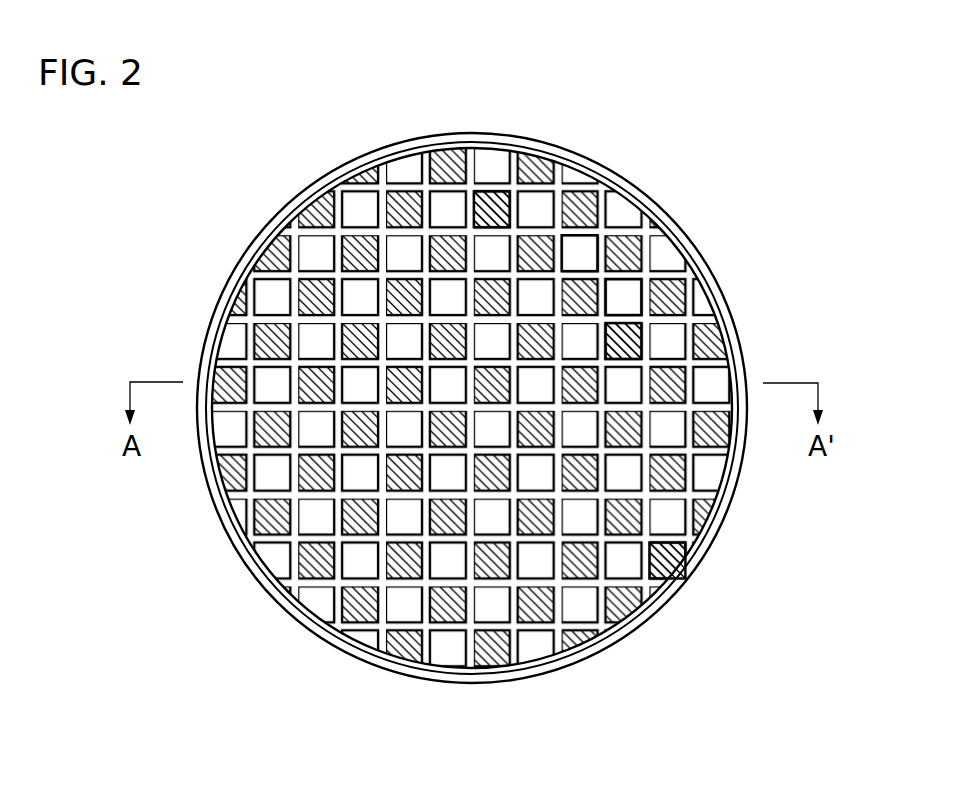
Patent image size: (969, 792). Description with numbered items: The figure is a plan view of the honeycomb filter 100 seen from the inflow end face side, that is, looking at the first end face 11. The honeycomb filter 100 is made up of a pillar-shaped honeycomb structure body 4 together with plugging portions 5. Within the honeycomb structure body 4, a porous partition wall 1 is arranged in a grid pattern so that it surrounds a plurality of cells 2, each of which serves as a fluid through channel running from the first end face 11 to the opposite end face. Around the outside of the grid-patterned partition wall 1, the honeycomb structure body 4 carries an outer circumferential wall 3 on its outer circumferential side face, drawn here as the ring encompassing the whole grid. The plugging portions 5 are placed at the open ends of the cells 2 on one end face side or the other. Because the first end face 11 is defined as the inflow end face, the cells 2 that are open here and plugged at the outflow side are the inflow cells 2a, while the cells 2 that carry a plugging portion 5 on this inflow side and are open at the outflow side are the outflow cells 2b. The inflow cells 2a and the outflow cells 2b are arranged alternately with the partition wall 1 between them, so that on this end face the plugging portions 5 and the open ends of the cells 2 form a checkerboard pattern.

The honeycomb filter 100 is at (812, 104).
The first end face 11 is at (277, 190).
The partition wall 1 is at (587, 233).
The cell 2 is at (718, 274).
The inflow cell 2a is at (623, 297).
The outflow cell 2b is at (620, 343).
The outer circumferential wall 3 is at (688, 572).
The honeycomb structure body 4 is at (752, 347).
The plugging portion 5 is at (490, 213).